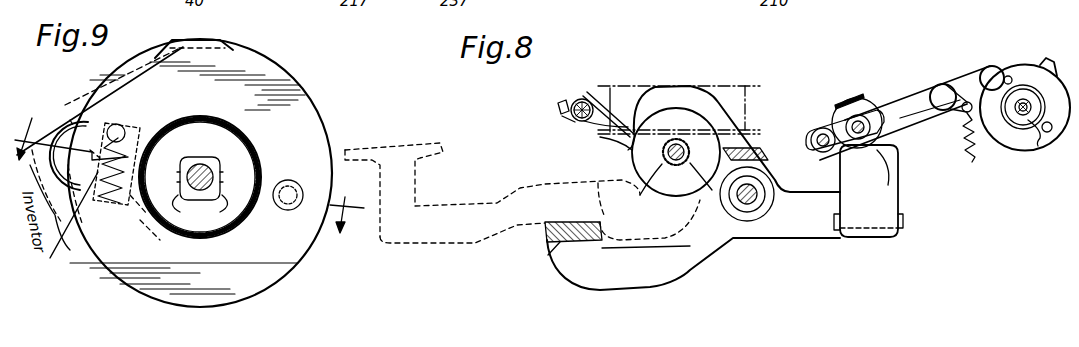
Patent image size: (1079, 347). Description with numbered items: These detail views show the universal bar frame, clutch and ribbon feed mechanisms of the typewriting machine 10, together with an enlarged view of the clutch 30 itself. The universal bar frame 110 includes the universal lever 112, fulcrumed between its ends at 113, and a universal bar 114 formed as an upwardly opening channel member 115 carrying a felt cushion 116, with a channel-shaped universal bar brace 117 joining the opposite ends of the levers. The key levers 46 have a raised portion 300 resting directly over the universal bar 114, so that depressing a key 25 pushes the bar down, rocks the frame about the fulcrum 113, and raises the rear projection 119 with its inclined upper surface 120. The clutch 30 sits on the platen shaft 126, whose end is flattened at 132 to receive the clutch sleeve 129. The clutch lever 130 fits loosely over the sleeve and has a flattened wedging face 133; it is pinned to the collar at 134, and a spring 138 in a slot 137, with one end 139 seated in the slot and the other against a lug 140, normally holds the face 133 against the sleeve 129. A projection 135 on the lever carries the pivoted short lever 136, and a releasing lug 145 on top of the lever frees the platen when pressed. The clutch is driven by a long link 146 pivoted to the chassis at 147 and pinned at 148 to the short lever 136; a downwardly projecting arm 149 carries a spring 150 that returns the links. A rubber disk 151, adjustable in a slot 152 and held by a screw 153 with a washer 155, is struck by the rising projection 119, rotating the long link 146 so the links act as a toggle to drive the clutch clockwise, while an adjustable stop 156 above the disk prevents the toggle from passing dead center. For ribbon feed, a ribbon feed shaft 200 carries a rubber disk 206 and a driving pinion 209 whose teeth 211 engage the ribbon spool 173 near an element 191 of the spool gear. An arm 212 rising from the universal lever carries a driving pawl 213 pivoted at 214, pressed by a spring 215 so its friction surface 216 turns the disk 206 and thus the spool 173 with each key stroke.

In FIG. 9, the machine / mechanism 10 is at (19, 135).
In FIG. 8, the machine / mechanism 10 is at (347, 205).
In FIG. 8, the keys 25 is at (418, 143).
In FIG. 9, the clutch 30 is at (288, 78).
In FIG. 8, the clutch 30 is at (1018, 62).
In FIG. 8, the key levers 46 is at (475, 244).
In FIG. 8, the universal bar frame 110 is at (758, 242).
In FIG. 8, the universal lever 112 is at (678, 262).
In FIG. 8, the fulcrum 113 is at (760, 200).
In FIG. 8, the universal bar 114 is at (548, 242).
In FIG. 8, the channel member 115 is at (580, 245).
In FIG. 8, the felt cushion 116 is at (556, 262).
In FIG. 8, the universal bar brace 117 is at (900, 228).
In FIG. 8, the projection 119 is at (899, 205).
In FIG. 8, the inclined upper surface 120 is at (899, 175).
In FIG. 9, the platen shaft 126 is at (206, 152).
In FIG. 9, the clutch sleeve 129 is at (250, 150).
In FIG. 8, the clutch sleeve 129 is at (1038, 148).
In FIG. 9, the clutch lever 130 is at (278, 276).
In FIG. 8, the clutch lever 130 is at (1020, 152).
In FIG. 9, the flattened edges 132 is at (199, 191).
In FIG. 9, the wedging face 133 is at (240, 225).
In FIG. 9, the pin 134 is at (289, 180).
In FIG. 9, the projection 135 is at (80, 112).
In FIG. 9, the short lever 136 is at (56, 262).
In FIG. 8, the short lever 136 is at (990, 64).
In FIG. 9, the slot 137 is at (112, 122).
In FIG. 9, the spring 138 is at (138, 225).
In FIG. 9, the spring end 139 is at (110, 208).
In FIG. 9, the lug 140 is at (122, 128).
In FIG. 9, the releasing lug 145 is at (215, 40).
In FIG. 8, the releasing lug 145 is at (1052, 62).
In FIG. 8, the long link 146 is at (905, 115).
In FIG. 8, the pivot 147 is at (811, 140).
In FIG. 8, the pin 148 is at (945, 82).
In FIG. 8, the downwardly projecting arm 149 is at (962, 115).
In FIG. 8, the spring 150 is at (975, 162).
In FIG. 8, the rubber disk 151 is at (868, 98).
In FIG. 8, the slot 152 is at (920, 98).
In FIG. 8, the screw 153 is at (845, 118).
In FIG. 8, the washer 155 is at (834, 150).
In FIG. 8, the stop 156 is at (853, 90).
In FIG. 8, the ribbon spool 173 is at (713, 86).
In FIG. 8, the guide 191 is at (760, 140).
In FIG. 8, the ribbon feed shaft 200 is at (690, 212).
In FIG. 8, the rubber disk 206 is at (670, 198).
In FIG. 8, the driving pinion 209 is at (640, 175).
In FIG. 8, the teeth 211 is at (668, 118).
In FIG. 8, the arm 212 is at (645, 92).
In FIG. 8, the driving pawl 213 is at (625, 140).
In FIG. 8, the pivot 214 is at (586, 97).
In FIG. 8, the spring 215 is at (590, 130).
In FIG. 8, the friction surface 216 is at (612, 168).
In FIG. 8, the raised portion 300 is at (540, 184).